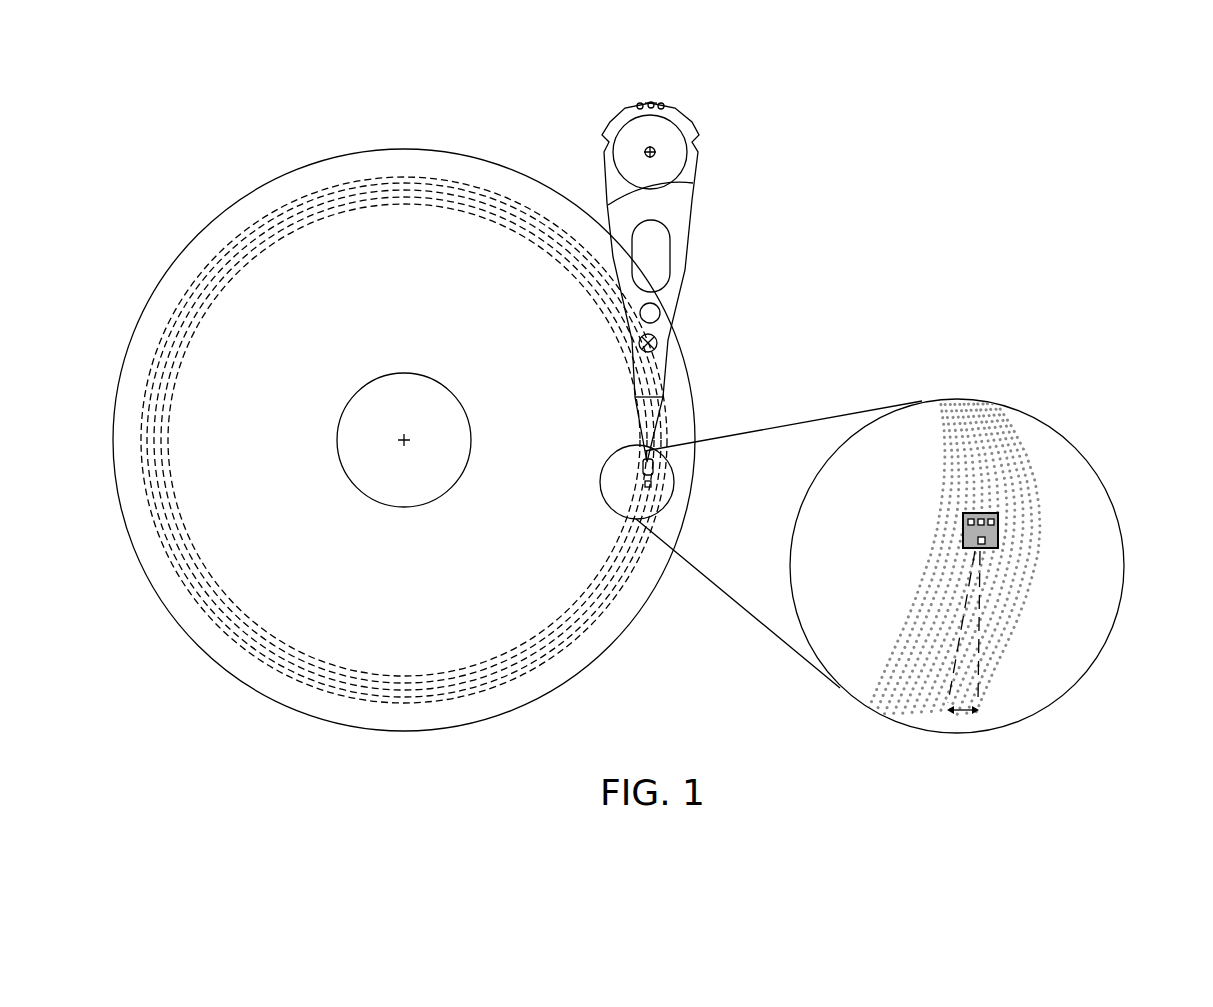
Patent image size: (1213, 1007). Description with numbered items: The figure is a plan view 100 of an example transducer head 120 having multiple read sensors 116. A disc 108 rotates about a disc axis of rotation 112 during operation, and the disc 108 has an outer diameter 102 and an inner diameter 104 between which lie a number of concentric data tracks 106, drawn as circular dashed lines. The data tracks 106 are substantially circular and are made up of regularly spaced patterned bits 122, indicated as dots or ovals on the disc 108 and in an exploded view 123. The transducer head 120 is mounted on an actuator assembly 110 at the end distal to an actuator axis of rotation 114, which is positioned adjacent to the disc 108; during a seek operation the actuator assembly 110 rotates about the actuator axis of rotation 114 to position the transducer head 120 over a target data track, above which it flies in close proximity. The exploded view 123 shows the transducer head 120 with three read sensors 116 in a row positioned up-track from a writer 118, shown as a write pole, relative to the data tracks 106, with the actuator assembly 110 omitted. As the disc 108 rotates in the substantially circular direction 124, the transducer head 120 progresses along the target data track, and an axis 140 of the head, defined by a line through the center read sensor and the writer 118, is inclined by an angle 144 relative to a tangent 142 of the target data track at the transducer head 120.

The plan view 100 is at (1004, 176).
The outer diameter 102 is at (386, 150).
The inner diameter 104 is at (445, 383).
The data tracks 106 is at (289, 186).
The disc 108 is at (237, 678).
The actuator assembly 110 is at (688, 268).
The disc axis of rotation 112 is at (402, 438).
The actuator axis of rotation 114 is at (655, 150).
The read sensors 116 is at (942, 523).
The writer 118 is at (985, 538).
The transducer head 120 is at (655, 485).
The patterned bits 122 is at (1088, 597).
The exploded view 123 is at (1060, 702).
The substantially circular direction 124 is at (608, 680).
The axis of the transducer head 140 is at (978, 667).
The tangent of the target data track 142 is at (948, 677).
The angle 144 is at (970, 728).